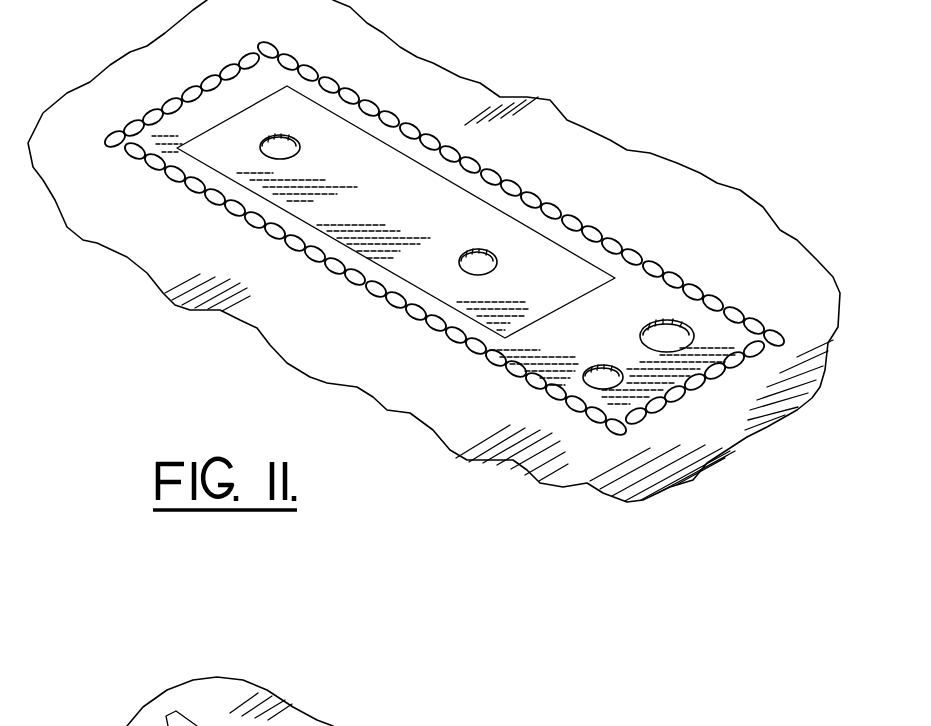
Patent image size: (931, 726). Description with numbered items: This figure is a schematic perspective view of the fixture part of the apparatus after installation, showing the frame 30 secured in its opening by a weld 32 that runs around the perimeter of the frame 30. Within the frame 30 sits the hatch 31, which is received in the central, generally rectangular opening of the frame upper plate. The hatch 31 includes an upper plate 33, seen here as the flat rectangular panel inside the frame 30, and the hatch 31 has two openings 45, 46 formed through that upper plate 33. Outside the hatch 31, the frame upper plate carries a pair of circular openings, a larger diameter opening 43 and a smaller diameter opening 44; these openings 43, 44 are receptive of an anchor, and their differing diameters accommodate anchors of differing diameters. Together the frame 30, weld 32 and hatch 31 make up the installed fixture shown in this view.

The frame 30 is at (560, 343).
The hatch 31 is at (460, 217).
The weld 32 is at (168, 100).
The upper plate 33 is at (422, 217).
The larger diameter opening 43 is at (667, 347).
The smaller diameter opening 44 is at (588, 387).
The opening 45 is at (293, 140).
The opening 46 is at (492, 258).